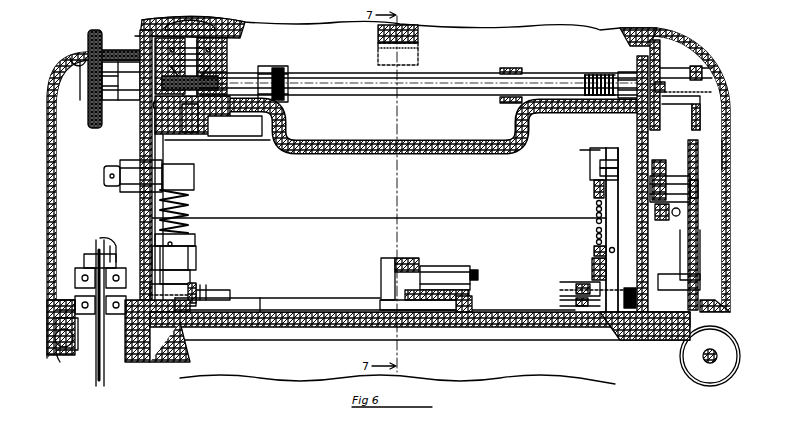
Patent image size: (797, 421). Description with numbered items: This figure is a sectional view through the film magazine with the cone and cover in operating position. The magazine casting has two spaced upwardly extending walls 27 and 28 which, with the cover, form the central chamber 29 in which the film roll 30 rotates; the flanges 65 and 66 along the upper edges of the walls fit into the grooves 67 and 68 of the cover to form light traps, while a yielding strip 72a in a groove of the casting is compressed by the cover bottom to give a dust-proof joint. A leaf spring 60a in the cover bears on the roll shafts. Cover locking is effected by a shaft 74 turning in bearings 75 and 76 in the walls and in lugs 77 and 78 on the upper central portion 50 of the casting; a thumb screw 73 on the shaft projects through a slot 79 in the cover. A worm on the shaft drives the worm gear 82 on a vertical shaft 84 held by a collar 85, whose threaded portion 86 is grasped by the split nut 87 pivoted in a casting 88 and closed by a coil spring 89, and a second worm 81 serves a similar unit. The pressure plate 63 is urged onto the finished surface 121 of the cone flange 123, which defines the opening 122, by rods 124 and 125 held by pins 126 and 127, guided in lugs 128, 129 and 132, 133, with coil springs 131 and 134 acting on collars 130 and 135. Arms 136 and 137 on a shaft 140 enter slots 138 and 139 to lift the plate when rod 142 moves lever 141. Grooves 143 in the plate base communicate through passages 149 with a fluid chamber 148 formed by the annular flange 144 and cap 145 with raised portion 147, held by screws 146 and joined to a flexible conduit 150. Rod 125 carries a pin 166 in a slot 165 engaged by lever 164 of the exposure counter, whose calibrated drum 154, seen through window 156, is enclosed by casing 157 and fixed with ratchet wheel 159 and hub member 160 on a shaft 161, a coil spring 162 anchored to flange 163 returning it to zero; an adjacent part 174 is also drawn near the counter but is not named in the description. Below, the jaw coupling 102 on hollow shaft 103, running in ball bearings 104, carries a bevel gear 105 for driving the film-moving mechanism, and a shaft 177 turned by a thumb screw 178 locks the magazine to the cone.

The strip or washer 72a is at (56, 300).
The groove 67 is at (142, 26).
The flange 65 is at (132, 44).
The slot or opening 79 is at (88, 38).
The thumb screw 73 is at (86, 108).
The bearing 75 is at (146, 98).
The wall 27 is at (140, 132).
The threaded portion 86 is at (205, 62).
The split nut 87 is at (215, 28).
The casting 88 is at (210, 46).
The coil spring 89 is at (212, 64).
The worm gear 82 is at (225, 84).
The vertical shaft 84 is at (204, 120).
The collar 85 is at (206, 136).
The upper central portion 50 is at (322, 156).
The shaft 74 is at (326, 88).
The lug 77 is at (280, 66).
The leaf spring 60a is at (418, 52).
The lug 78 is at (524, 68).
The worm 81 is at (598, 74).
The bearing 76 is at (632, 72).
The groove 68 is at (652, 52).
The flange 66 is at (662, 64).
The window 156 is at (690, 68).
The bushing 174 is at (666, 86).
The calibrated drum 154 is at (702, 98).
The ratchet wheel 159 is at (700, 110).
The wall 28 is at (646, 262).
The casing 157 is at (722, 154).
The hub member 160 is at (684, 170).
The shaft 161 is at (700, 190).
The coil spring 162 is at (680, 214).
The flange 163 is at (686, 228).
The lever 164 is at (612, 146).
The pin 166 is at (600, 163).
The slot 165 is at (600, 172).
The lug 132 is at (594, 188).
The coil spring 134 is at (596, 204).
The rod 125 is at (612, 214).
The collar 135 is at (594, 242).
The lug 133 is at (594, 262).
The arm or lever 137 is at (592, 276).
The pin 127 is at (574, 286).
The slot 139 is at (574, 304).
The film roll 30 is at (300, 212).
The central chamber 29 is at (416, 196).
The lug 128 is at (194, 176).
The coil spring 131 is at (192, 204).
The collar 130 is at (194, 238).
The lug 129 is at (196, 252).
The rod 124 is at (196, 258).
The arm or lever 136 is at (200, 284).
The pin 126 is at (226, 288).
The slot 138 is at (180, 297).
The ball bearings 104 is at (88, 284).
The lever 141 is at (120, 254).
The rod 142 is at (100, 260).
The bevel gear 105 is at (82, 270).
The hollow shaft 103 is at (56, 317).
The jaw coupling 102 is at (58, 336).
The thumb screw 178 is at (48, 344).
The shaft 177 is at (56, 362).
The plane surface 121 is at (178, 332).
The flange 123 is at (180, 345).
The opening 122 is at (278, 340).
The pressure plate 63 is at (296, 302).
The shaft 140 is at (350, 278).
The cap or cover plate 145 is at (384, 284).
The raised central portion 147 is at (404, 258).
The flexible conduit 150 is at (444, 268).
The screws 146 is at (478, 282).
The annular flange 144 is at (474, 304).
The channels or grooves 143 is at (350, 338).
The openings or passages 149 is at (416, 340).
The fluid chamber 148 is at (446, 332).